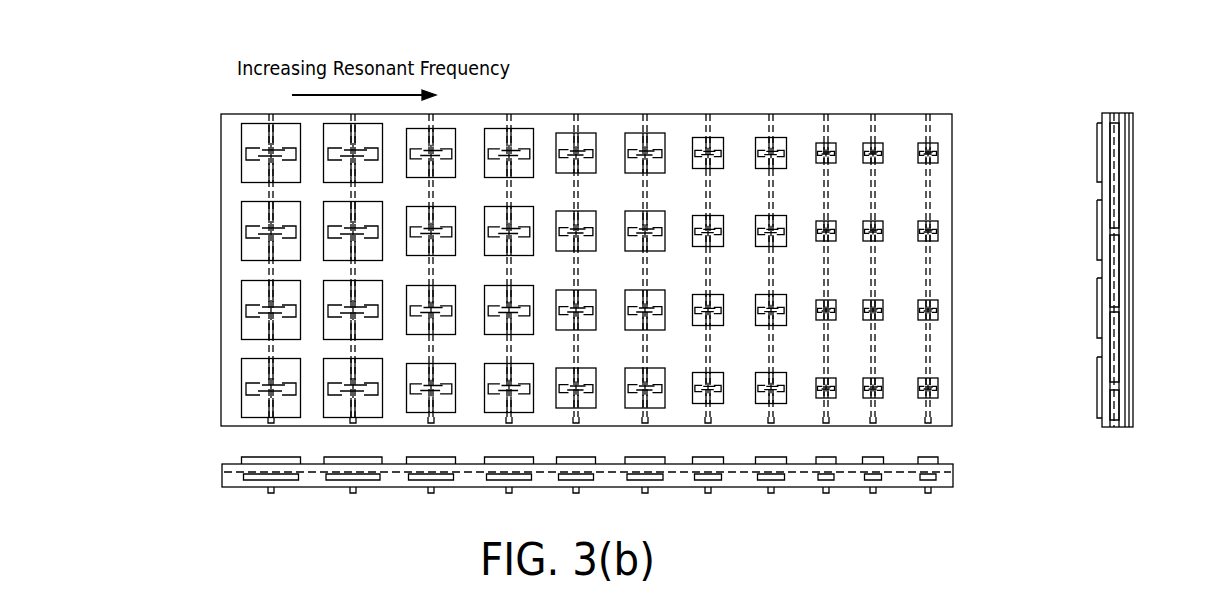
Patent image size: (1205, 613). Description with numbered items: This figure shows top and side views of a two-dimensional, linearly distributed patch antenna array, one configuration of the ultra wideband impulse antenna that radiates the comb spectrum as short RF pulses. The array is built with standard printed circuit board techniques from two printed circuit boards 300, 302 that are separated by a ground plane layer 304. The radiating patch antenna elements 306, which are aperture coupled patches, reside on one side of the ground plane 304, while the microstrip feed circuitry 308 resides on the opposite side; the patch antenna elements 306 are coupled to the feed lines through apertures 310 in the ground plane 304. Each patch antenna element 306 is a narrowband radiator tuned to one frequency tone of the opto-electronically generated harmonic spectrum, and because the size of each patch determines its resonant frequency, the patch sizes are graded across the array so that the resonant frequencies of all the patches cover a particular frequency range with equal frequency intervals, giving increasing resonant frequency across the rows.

The printed circuit board 300 is at (952, 165).
The printed circuit board 302 is at (221, 485).
The ground plane layer 304 is at (1108, 423).
The patch antenna elements 306 is at (1097, 220).
The microstrip feed circuitry 308 is at (930, 493).
The apertures 310 is at (1115, 307).